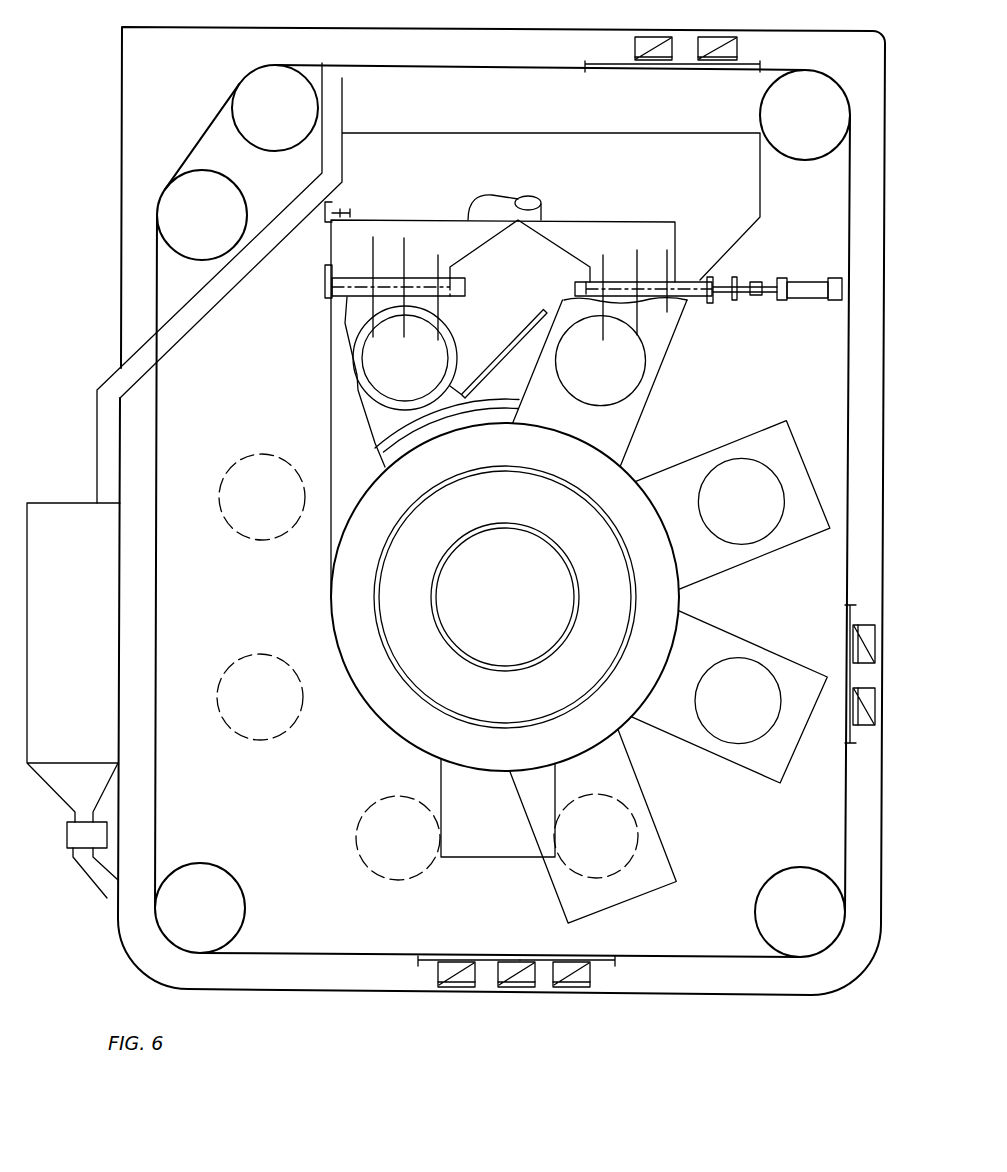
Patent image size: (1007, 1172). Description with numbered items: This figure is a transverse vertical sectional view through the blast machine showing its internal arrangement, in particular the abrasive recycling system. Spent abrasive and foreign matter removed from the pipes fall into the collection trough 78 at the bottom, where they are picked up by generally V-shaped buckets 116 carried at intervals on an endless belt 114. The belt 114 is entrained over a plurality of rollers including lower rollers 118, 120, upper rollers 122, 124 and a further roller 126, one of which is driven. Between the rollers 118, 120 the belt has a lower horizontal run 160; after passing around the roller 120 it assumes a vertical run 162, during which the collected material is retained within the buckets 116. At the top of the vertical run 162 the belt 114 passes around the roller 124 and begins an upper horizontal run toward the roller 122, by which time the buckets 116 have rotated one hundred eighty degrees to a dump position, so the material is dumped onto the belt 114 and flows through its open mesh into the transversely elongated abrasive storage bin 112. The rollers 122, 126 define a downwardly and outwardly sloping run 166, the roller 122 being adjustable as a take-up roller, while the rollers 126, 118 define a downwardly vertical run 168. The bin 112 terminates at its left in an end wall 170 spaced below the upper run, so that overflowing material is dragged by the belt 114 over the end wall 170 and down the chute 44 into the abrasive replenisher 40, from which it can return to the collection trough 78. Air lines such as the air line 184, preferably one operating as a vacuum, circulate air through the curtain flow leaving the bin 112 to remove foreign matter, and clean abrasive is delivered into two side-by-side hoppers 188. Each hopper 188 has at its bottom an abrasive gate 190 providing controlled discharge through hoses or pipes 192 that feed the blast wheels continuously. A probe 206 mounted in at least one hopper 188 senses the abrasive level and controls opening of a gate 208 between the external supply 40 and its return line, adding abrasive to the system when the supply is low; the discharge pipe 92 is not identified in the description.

The abrasive replenisher 40 is at (60, 515).
The abrasive line 44 is at (278, 214).
The collection trough 78 is at (367, 982).
The discharge pipe 92 is at (105, 893).
The abrasive storage bin 112 is at (597, 125).
The endless belt 114 is at (448, 960).
The buckets 116 is at (515, 990).
The lower roller 118 is at (233, 897).
The lower roller 120 is at (785, 915).
The upper roller 122 is at (280, 88).
The upper roller 124 is at (828, 90).
The further roller 126 is at (185, 215).
The lower horizontal run 160 is at (607, 960).
The vertical run 162 is at (848, 625).
The downwardly and outwardly sloping run 166 is at (203, 128).
The downwardly vertically sloping run 168 is at (157, 645).
The end wall 170 is at (342, 108).
The air line 184 is at (620, 65).
The bins (hoppers) 188 is at (447, 232).
The abrasive gate 190 is at (567, 287).
The hoses or pipes 192 is at (403, 260).
The probe 206 is at (350, 210).
The gate 208 is at (72, 835).